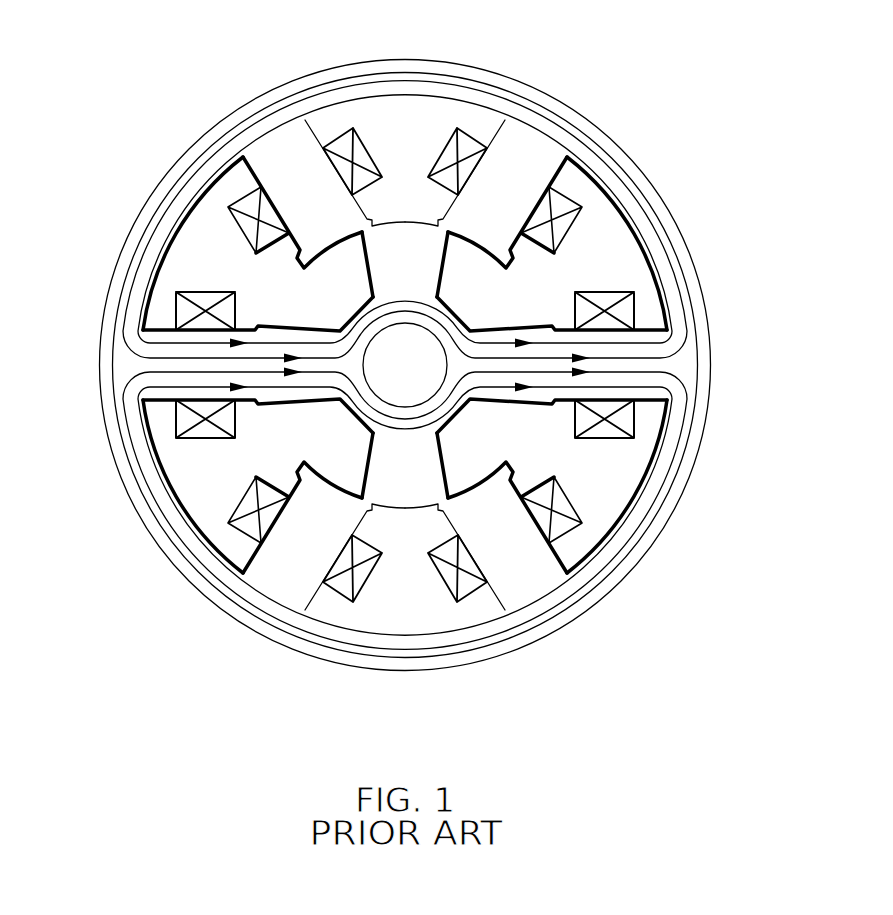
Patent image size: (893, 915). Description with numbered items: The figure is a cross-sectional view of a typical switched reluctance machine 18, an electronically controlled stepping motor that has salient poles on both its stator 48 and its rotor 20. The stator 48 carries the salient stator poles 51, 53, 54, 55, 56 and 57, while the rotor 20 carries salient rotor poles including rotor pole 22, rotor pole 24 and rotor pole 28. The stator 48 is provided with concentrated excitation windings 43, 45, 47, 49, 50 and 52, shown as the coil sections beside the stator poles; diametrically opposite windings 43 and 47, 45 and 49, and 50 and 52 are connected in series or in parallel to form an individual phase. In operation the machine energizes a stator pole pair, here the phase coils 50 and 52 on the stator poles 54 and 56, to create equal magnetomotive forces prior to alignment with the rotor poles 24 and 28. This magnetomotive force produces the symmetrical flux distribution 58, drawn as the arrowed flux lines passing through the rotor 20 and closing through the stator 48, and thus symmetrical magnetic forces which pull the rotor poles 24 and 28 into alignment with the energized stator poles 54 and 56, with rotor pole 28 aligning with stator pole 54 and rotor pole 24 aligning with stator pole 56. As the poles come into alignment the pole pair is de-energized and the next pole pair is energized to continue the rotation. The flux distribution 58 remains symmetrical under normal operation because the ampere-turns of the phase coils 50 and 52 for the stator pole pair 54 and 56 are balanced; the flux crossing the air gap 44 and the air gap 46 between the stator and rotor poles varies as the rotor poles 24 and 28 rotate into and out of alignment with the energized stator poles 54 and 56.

The switched reluctance machine 18 is at (219, 78).
The rotor 20 is at (386, 385).
The rotor pole 22 is at (386, 270).
The rotor pole 24 is at (535, 322).
The rotor pole 28 is at (278, 328).
The excitation winding 43 is at (362, 592).
The air gap 44 is at (560, 403).
The excitation winding 45 is at (572, 552).
The air gap 46 is at (270, 402).
The excitation winding 47 is at (462, 136).
The stator 48 is at (467, 660).
The excitation winding 49 is at (348, 135).
The phase coil 50 is at (200, 296).
The stator pole 51 is at (288, 203).
The phase coil 52 is at (640, 298).
The stator pole 53 is at (491, 203).
The stator pole 54 is at (205, 438).
The stator pole 55 is at (283, 565).
The stator pole 56 is at (637, 436).
The stator pole 57 is at (488, 557).
The flux distribution 58 is at (128, 430).